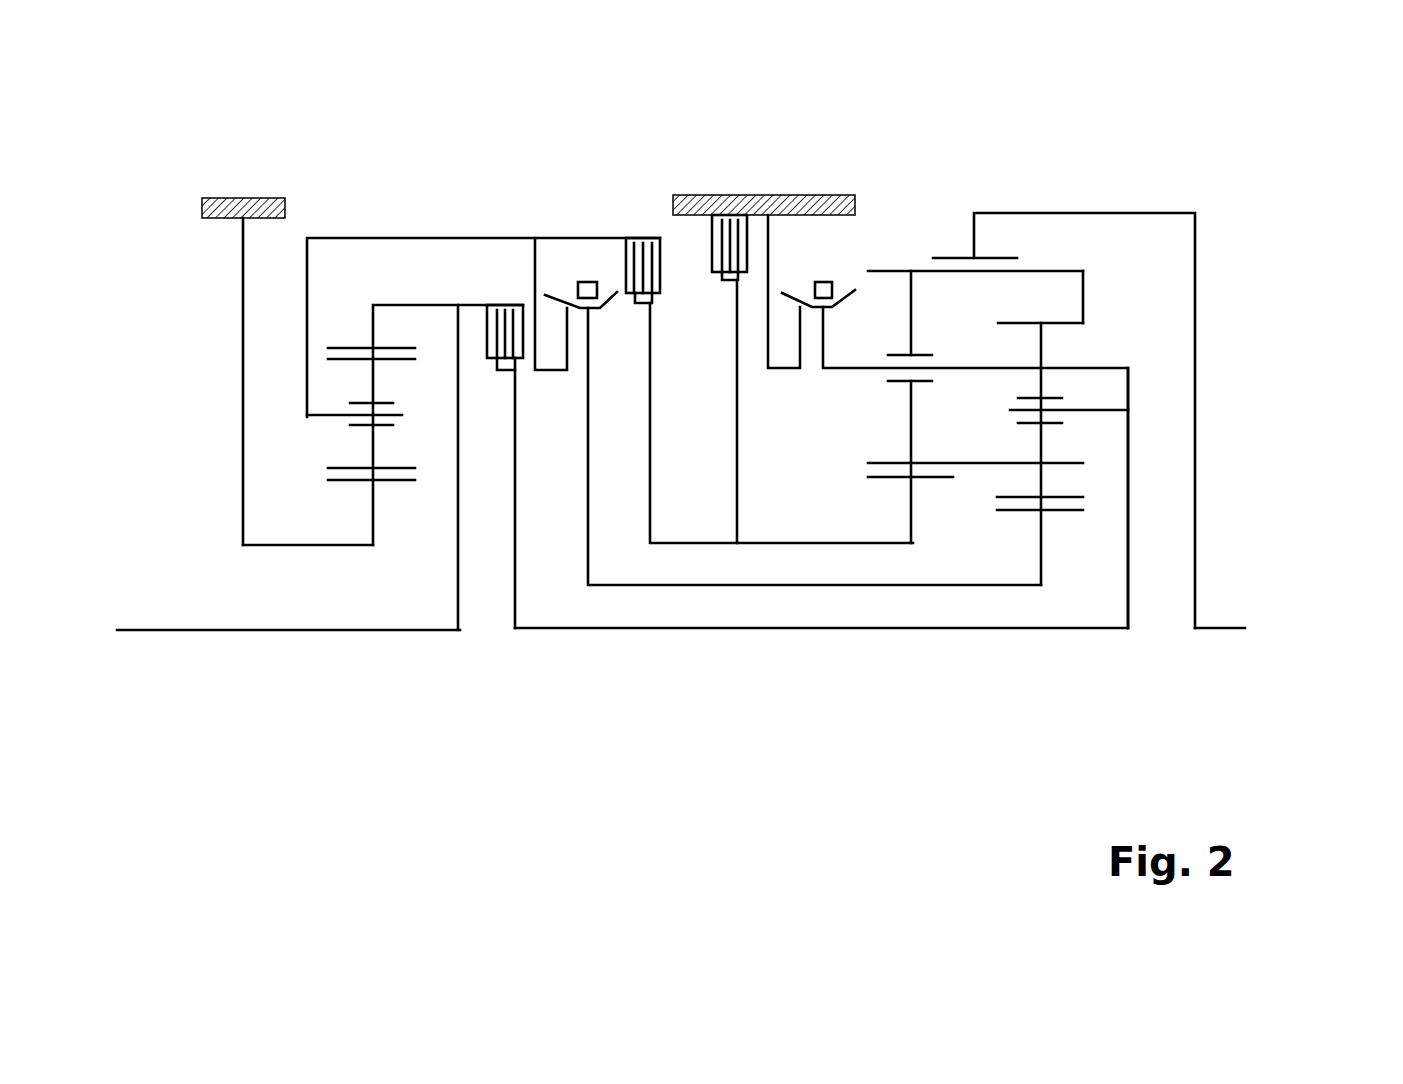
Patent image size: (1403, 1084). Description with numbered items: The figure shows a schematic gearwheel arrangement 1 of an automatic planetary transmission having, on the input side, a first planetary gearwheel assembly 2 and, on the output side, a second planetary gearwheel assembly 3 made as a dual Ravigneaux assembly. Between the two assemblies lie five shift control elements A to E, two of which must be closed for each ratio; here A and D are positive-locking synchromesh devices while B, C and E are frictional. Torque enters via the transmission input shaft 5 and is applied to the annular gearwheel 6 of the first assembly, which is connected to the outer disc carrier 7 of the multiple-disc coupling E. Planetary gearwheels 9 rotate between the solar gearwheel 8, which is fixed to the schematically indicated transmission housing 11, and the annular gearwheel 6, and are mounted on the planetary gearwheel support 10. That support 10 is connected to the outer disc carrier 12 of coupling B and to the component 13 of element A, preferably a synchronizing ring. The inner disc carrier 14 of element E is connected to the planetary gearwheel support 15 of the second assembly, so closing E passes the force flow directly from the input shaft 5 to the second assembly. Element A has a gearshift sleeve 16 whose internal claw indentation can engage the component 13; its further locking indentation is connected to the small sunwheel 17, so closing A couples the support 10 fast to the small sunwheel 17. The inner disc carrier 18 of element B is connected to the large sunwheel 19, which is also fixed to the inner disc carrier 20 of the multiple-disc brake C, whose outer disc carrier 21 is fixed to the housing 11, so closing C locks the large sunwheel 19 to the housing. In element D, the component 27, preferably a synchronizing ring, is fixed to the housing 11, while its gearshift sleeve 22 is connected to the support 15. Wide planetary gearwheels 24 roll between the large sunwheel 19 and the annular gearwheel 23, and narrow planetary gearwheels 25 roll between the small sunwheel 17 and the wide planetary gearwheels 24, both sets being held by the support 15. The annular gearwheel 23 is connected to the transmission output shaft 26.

The schematic gearwheel arrangement 1 is at (232, 152).
The first planetary gearwheel assembly 2 is at (400, 520).
The second planetary gearwheel assembly 3 is at (1142, 332).
The transmission input shaft 5 is at (153, 633).
The annular gearwheel 6 is at (392, 303).
The outer disc carrier 7 is at (521, 303).
The solar gearwheel 8 is at (285, 545).
The planetary gearwheels 9 is at (372, 380).
The planetary gearwheel support 10 is at (308, 320).
The transmission housing 11 is at (243, 217).
The outer disc carrier 12 is at (660, 238).
The component of shift control element A 13 is at (563, 308).
The inner disc carrier 14 is at (517, 583).
The planetary gearwheel support 15 is at (1128, 498).
The gearshift sleeve 16 is at (587, 282).
The small sunwheel 17 is at (1017, 513).
The inner disc carrier 18 is at (650, 340).
The large sunwheel 19 is at (883, 480).
The inner disc carrier 20 is at (738, 505).
The outer disc carrier 21 is at (717, 213).
The gearshift sleeve 22 is at (828, 282).
The annular gearwheel 23 is at (942, 258).
The wide planetary gearwheels 24 is at (1043, 270).
The narrow planetary gearwheels 25 is at (1085, 323).
The transmission output shaft 26 is at (1233, 628).
The component of shift control element D 27 is at (798, 370).